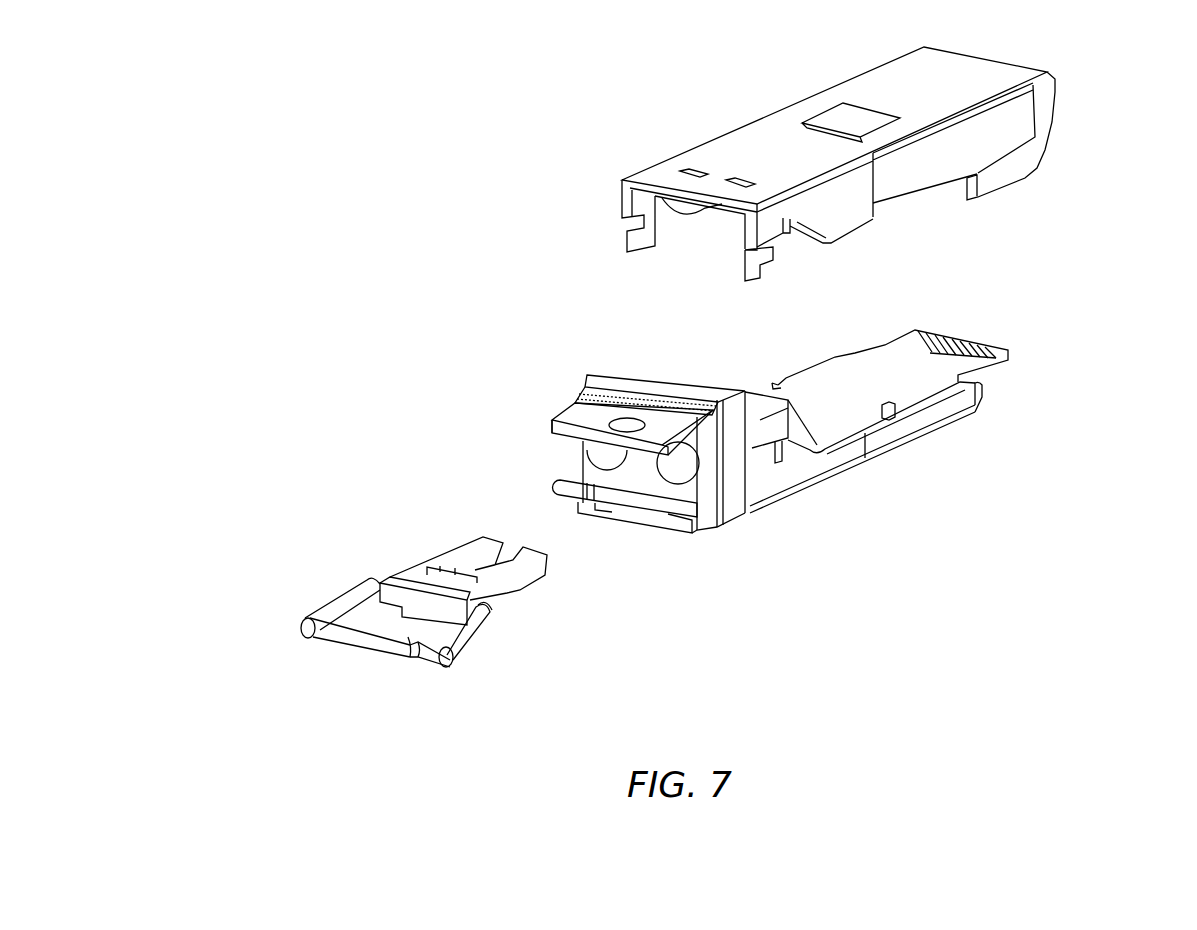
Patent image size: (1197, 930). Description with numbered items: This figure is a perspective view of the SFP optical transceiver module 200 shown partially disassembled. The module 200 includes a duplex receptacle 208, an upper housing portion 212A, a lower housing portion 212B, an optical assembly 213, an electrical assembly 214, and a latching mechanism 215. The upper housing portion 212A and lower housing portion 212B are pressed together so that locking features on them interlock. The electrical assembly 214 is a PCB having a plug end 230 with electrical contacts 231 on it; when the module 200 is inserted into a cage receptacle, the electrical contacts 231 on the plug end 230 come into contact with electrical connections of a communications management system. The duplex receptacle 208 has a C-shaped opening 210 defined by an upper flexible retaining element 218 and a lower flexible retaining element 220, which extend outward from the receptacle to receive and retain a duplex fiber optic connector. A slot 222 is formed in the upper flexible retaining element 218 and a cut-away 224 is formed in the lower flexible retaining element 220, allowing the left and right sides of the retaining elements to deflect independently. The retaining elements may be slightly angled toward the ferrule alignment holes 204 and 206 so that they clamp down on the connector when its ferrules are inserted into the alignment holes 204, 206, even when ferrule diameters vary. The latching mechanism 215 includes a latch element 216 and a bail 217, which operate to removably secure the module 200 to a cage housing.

The SFP optical transceiver module 200 is at (330, 160).
The upper housing portion 212A is at (697, 108).
The lower housing portion 212B is at (905, 509).
The electrical assembly 214 is at (931, 306).
The electrical contacts 231 is at (957, 343).
The plug end 230 is at (1041, 394).
The optical assembly 213 is at (767, 419).
The C-shaped opening 210 is at (591, 486).
The duplex receptacle 208 is at (615, 372).
The slot 222 is at (603, 423).
The upper flexible retaining element 218 is at (549, 427).
The ferrule alignment hole 204 is at (600, 464).
The ferrule alignment hole 206 is at (681, 470).
The lower flexible retaining element 220 is at (665, 520).
The cut-away 224 is at (617, 510).
The latching mechanism 215 is at (425, 545).
The latch element 216 is at (527, 590).
The bail 217 is at (340, 598).